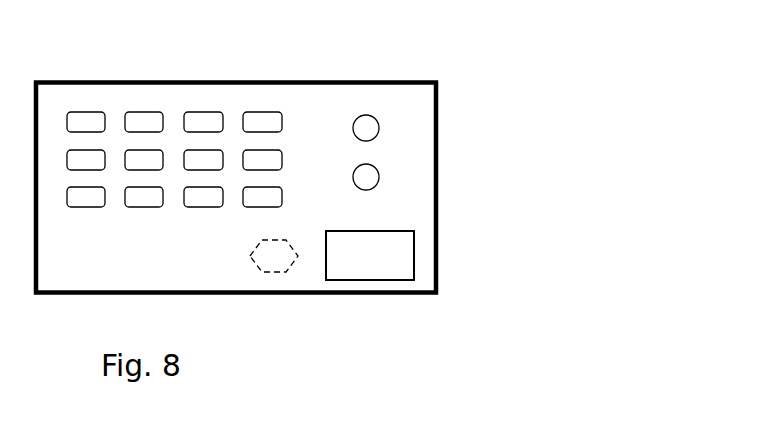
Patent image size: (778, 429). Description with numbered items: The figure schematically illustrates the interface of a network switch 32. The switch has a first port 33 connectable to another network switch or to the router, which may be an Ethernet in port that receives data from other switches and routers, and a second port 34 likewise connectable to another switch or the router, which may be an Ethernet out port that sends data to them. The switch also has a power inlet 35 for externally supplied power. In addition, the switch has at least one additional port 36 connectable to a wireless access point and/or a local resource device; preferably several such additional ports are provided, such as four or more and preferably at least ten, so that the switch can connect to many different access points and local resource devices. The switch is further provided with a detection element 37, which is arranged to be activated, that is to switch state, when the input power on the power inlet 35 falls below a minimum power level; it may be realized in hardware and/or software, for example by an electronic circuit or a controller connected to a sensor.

The network switch 32 is at (347, 80).
The first port 33 is at (379, 124).
The second port 34 is at (379, 178).
The power inlet 35 is at (414, 256).
The additional port 36 is at (87, 112).
The detection element 37 is at (282, 268).